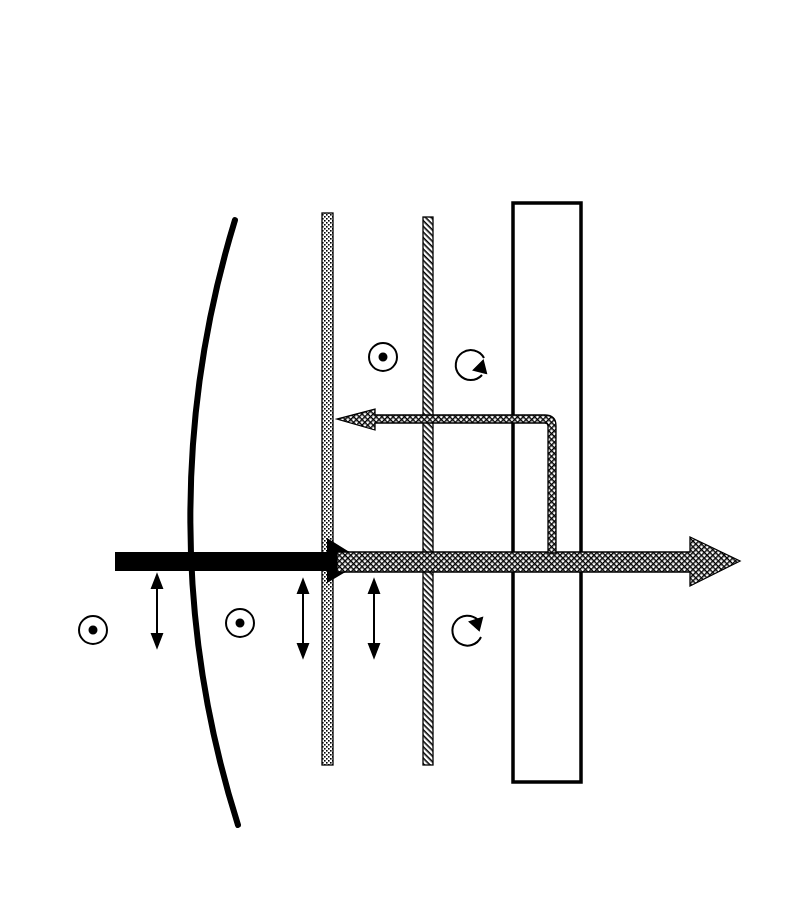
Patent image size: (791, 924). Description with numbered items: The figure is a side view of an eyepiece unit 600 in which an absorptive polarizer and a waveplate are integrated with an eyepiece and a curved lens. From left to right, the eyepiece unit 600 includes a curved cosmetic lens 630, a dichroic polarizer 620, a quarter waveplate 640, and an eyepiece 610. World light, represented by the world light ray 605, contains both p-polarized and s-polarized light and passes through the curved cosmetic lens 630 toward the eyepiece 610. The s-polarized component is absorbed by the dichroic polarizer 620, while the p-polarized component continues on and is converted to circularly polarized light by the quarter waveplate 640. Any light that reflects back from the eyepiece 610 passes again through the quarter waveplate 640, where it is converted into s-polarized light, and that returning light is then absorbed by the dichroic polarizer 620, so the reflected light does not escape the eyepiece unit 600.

The eyepiece unit 600 is at (545, 98).
The world light ray 605 is at (163, 551).
The eyepiece 610 is at (581, 748).
The dichroic polarizer 620 is at (322, 390).
The curved cosmetic lens 630 is at (194, 410).
The quarter waveplate 640 is at (425, 257).